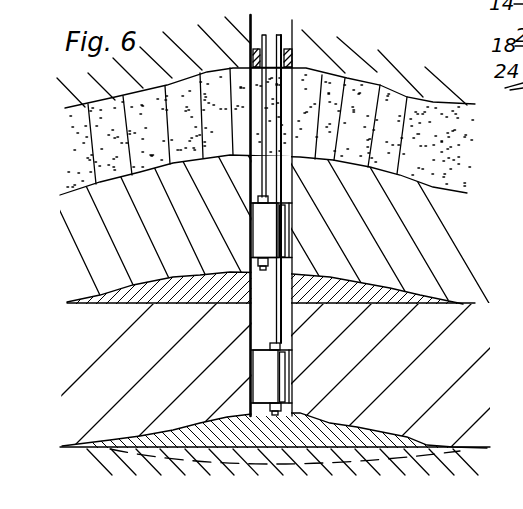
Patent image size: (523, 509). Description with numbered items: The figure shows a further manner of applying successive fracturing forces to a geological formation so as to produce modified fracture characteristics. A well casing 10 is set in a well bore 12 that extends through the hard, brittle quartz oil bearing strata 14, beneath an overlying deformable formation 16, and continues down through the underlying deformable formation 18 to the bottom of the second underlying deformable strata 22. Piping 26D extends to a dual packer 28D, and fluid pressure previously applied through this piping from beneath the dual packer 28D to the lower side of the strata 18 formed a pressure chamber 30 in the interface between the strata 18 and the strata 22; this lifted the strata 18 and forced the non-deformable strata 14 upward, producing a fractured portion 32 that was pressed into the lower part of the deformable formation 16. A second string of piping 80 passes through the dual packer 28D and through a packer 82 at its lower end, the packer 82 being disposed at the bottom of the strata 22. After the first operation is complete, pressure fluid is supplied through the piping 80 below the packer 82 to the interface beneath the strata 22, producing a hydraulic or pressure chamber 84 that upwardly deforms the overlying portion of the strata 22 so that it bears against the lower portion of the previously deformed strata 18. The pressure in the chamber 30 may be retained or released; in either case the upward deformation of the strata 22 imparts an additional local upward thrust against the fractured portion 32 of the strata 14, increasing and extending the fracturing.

The well casing 10 is at (293, 56).
The well bore 12 is at (291, 203).
The quartz oil bearing strata 14 is at (437, 113).
The overlying deformable formation 16 is at (376, 69).
The underlying deformable formation 18 is at (408, 258).
The second underlying deformable formation 22 is at (408, 362).
The piping 26D is at (262, 175).
The dual packer 28D is at (257, 238).
The pressure chamber 30 is at (440, 308).
The fractured portion 32 is at (212, 77).
The second string of piping 80 is at (281, 38).
The packer 82 is at (287, 395).
The hydraulic or pressure chamber 84 is at (187, 427).